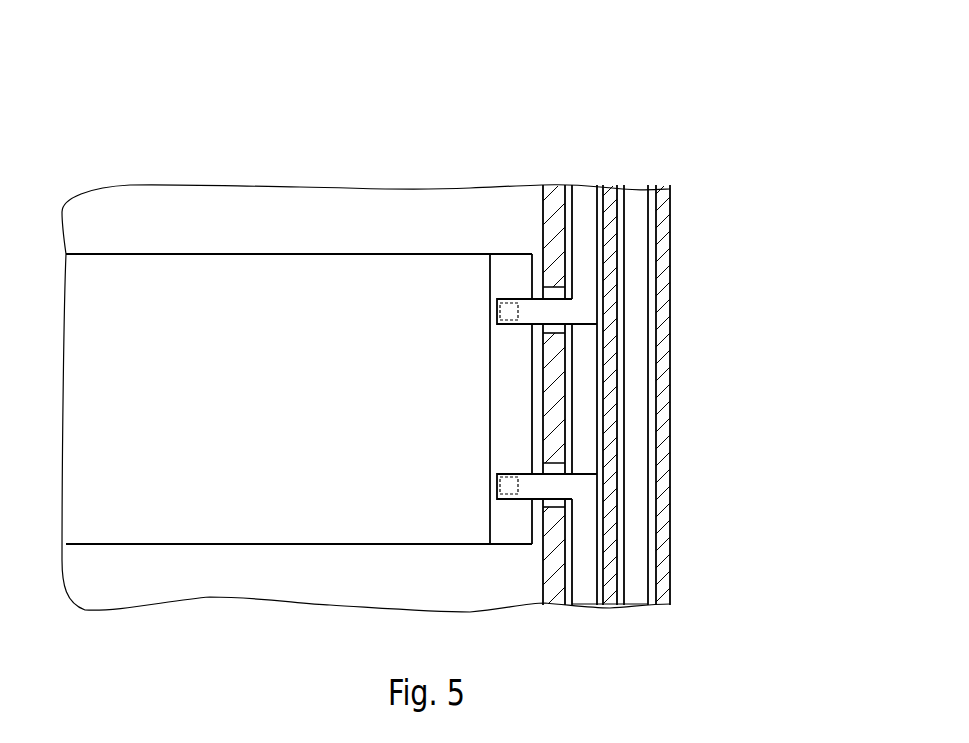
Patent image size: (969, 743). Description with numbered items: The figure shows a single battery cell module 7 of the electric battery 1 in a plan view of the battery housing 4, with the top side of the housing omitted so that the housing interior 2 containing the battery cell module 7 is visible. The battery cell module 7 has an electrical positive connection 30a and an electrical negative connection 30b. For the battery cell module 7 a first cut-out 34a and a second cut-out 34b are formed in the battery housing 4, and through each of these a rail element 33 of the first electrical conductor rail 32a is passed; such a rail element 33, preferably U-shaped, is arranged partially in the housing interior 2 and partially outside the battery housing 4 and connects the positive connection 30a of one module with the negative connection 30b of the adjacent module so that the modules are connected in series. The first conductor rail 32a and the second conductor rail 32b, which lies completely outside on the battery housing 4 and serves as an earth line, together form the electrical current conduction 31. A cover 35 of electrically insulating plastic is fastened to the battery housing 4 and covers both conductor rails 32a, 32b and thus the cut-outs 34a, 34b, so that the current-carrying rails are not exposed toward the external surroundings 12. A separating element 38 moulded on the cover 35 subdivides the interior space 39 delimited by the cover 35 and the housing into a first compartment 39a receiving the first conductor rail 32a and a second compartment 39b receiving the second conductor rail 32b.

The electric battery 1 is at (705, 163).
The housing interior 2 is at (298, 236).
The battery housing 4 is at (543, 211).
The battery cell module 7 is at (298, 432).
The external surroundings 12 is at (786, 386).
The electrical positive connection 30a is at (498, 481).
The electrical negative connection 30b is at (498, 306).
The electrical current conduction 31 is at (686, 407).
The first electrical conductor rail 32a is at (587, 222).
The second electrical conductor rail 32b is at (637, 463).
The rail element 33 is at (672, 395).
The first cut-out 34a is at (548, 503).
The second cut-out 34b is at (548, 329).
The cover 35 is at (670, 322).
The separating element 38 is at (622, 352).
The interior space 39 is at (652, 423).
The first compartment 39a is at (690, 395).
The second compartment 39b is at (725, 395).